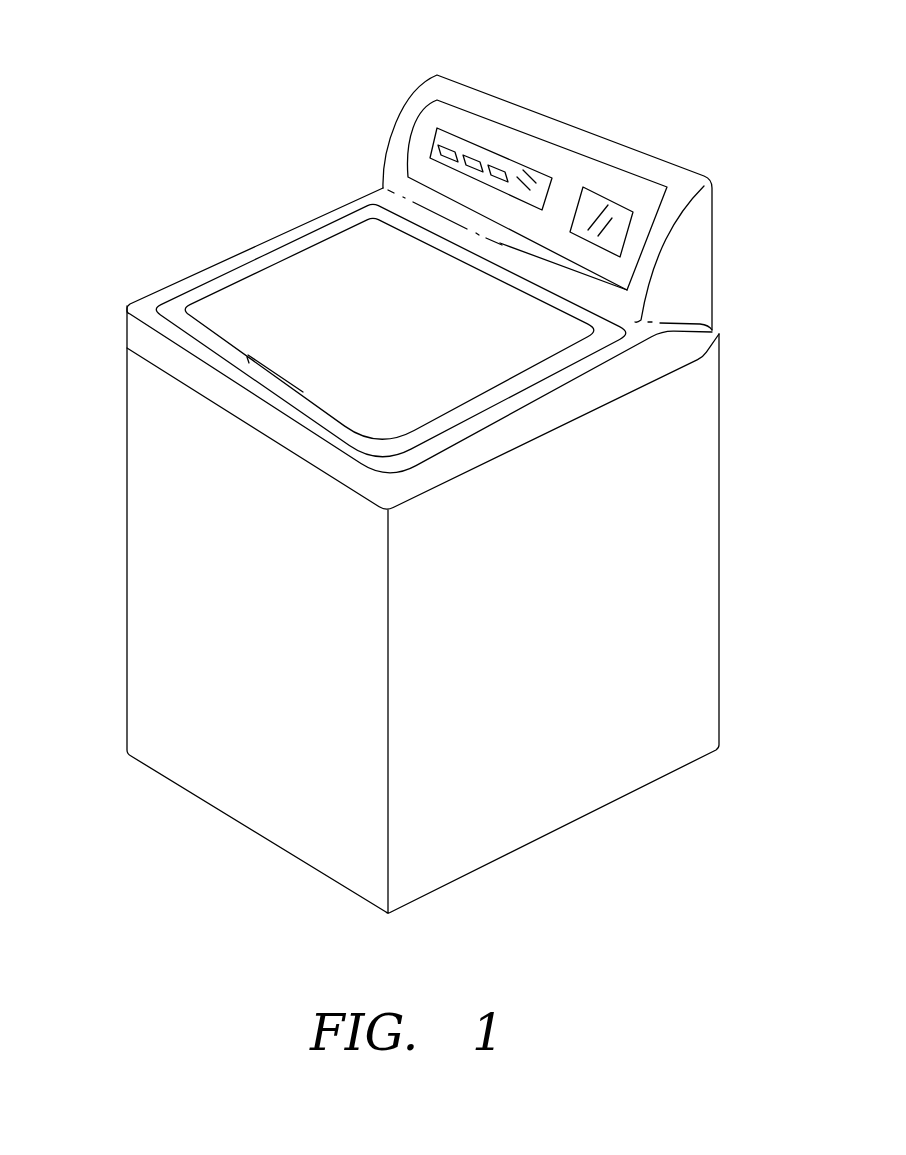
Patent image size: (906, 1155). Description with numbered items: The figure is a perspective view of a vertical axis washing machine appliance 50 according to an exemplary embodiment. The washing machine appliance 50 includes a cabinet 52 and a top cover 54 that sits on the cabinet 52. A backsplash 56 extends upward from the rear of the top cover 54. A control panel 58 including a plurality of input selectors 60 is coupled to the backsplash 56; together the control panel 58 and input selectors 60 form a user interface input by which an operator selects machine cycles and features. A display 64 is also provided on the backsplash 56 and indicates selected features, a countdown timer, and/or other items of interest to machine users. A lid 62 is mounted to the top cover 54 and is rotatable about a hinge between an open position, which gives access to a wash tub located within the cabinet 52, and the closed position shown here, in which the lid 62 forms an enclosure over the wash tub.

The washing machine appliance 50 is at (247, 100).
The cabinet 52 is at (700, 507).
The top cover 54 is at (142, 336).
The backsplash 56 is at (684, 275).
The control panel 58 is at (525, 177).
The input selectors 60 is at (498, 167).
The lid 62 is at (320, 273).
The display 64 is at (620, 213).